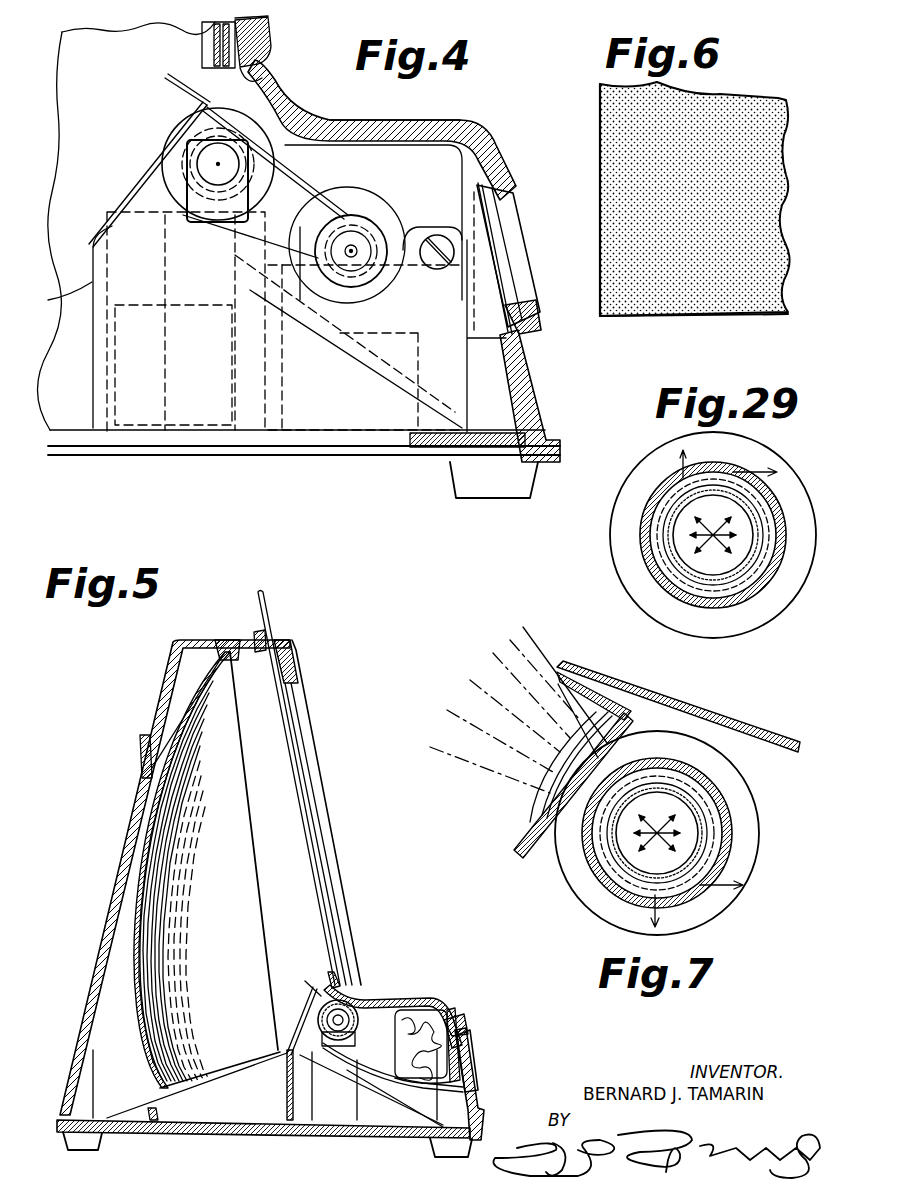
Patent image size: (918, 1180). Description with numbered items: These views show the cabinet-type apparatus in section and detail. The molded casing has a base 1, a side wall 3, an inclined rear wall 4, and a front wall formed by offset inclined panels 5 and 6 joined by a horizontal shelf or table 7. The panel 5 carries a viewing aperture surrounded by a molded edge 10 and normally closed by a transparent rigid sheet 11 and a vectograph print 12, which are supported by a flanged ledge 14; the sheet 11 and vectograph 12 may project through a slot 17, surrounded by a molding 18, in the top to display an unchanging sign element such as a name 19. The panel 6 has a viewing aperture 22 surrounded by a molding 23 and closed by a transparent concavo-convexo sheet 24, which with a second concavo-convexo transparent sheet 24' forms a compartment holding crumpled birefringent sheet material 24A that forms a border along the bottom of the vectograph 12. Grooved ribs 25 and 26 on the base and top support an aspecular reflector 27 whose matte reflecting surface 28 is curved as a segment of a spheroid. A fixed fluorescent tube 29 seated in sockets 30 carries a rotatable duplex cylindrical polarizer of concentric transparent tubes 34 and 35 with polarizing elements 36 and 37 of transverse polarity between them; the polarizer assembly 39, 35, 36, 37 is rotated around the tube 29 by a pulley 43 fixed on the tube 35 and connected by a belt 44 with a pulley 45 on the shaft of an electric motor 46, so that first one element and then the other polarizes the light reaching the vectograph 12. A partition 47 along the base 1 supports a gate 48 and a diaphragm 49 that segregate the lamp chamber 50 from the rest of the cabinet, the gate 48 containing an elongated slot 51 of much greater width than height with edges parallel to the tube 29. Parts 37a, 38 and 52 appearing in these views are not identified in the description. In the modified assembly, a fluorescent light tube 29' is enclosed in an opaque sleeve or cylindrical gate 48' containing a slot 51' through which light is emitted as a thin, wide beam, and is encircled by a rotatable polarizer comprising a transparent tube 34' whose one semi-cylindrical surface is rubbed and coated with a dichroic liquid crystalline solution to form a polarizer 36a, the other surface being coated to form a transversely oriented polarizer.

In FIG. 4, the base 1 is at (424, 458).
In FIG. 5, the base 1 is at (350, 1136).
In FIG. 4, the side wall 3 is at (106, 82).
In FIG. 5, the inclined rear wall 4 is at (116, 904).
In FIG. 4, the inclined panel 5 is at (275, 62).
In FIG. 4, the inclined panel 6 is at (538, 382).
In FIG. 5, the inclined panel 6 is at (476, 1112).
In FIG. 4, the horizontal shelf 7 is at (408, 122).
In FIG. 4, the molded edge 10 is at (268, 36).
In FIG. 4, the transparent rigid sheet 11 is at (270, 17).
In FIG. 5, the transparent rigid sheet 11 is at (324, 882).
In FIG. 4, the vectograph print 12 is at (213, 40).
In FIG. 5, the vectograph print 12 is at (326, 898).
In FIG. 4, the flanged ledge 14 is at (249, 76).
In FIG. 5, the flanged ledge 14 is at (330, 977).
In FIG. 5, the slot 17 is at (268, 648).
In FIG. 5, the molding 18 is at (254, 634).
In FIG. 5, the name 19 is at (268, 602).
In FIG. 4, the viewing aperture 22 is at (510, 230).
In FIG. 5, the viewing aperture 22 is at (470, 1068).
In FIG. 4, the molding 23 is at (538, 322).
In FIG. 5, the molding 23 is at (452, 1026).
In FIG. 4, the transparent concavo-convexo sheet 24 is at (519, 258).
In FIG. 5, the transparent concavo-convexo sheet 24 is at (451, 1045).
In FIG. 5, the concavo-convexo transparent sheet 24' is at (485, 1045).
In FIG. 5, the crumpled birefringent sheet material 24A is at (436, 1073).
In FIG. 5, the grooved rib 25 is at (153, 1120).
In FIG. 5, the grooved rib 26 is at (222, 642).
In FIG. 6, the aspecular reflector 27 is at (778, 314).
In FIG. 5, the aspecular reflector 27 is at (138, 995).
In FIG. 6, the matte reflecting surface 28 is at (735, 305).
In FIG. 5, the matte reflecting surface 28 is at (150, 866).
In FIG. 4, the fluorescent tube 29 is at (193, 164).
In FIG. 7, the fluorescent tube 29 is at (703, 830).
In FIG. 5, the fluorescent tube 29 is at (358, 999).
In FIG. 29, the fluorescent light tube 29' is at (659, 535).
In FIG. 4, the socket 30 is at (195, 176).
In FIG. 29, the socket 30 is at (664, 448).
In FIG. 7, the socket 30 is at (742, 780).
In FIG. 7, the transparent tube 34 is at (699, 833).
In FIG. 29, the transparent tube 34' is at (743, 520).
In FIG. 7, the transparent tube 35 is at (730, 860).
In FIG. 7, the polarizing element 36 is at (700, 770).
In FIG. 29, the polarizer 36a is at (755, 580).
In FIG. 7, the polarizing element 37 is at (600, 877).
In FIG. 29, the outer ring 37a is at (643, 528).
In FIG. 7, the flange 38 is at (637, 767).
In FIG. 7, the polarizer assembly 39 is at (700, 894).
In FIG. 4, the pulley 43 is at (258, 128).
In FIG. 4, the belt 44 is at (305, 184).
In FIG. 4, the pulley 45 is at (365, 274).
In FIG. 4, the electric motor 46 is at (403, 205).
In FIG. 4, the partition 47 is at (96, 330).
In FIG. 5, the partition 47 is at (287, 1076).
In FIG. 4, the gate 48 is at (143, 174).
In FIG. 7, the gate 48 is at (542, 786).
In FIG. 5, the gate 48 is at (300, 1018).
In FIG. 29, the cylindrical gate 48' is at (678, 549).
In FIG. 4, the diaphragm 49 is at (284, 322).
In FIG. 5, the diaphragm 49 is at (416, 1086).
In FIG. 5, the lamp chamber 50 is at (386, 1024).
In FIG. 7, the elongated slot 51 is at (545, 755).
In FIG. 29, the slot 51' is at (690, 477).
In FIG. 7, the reflector 52 is at (566, 790).